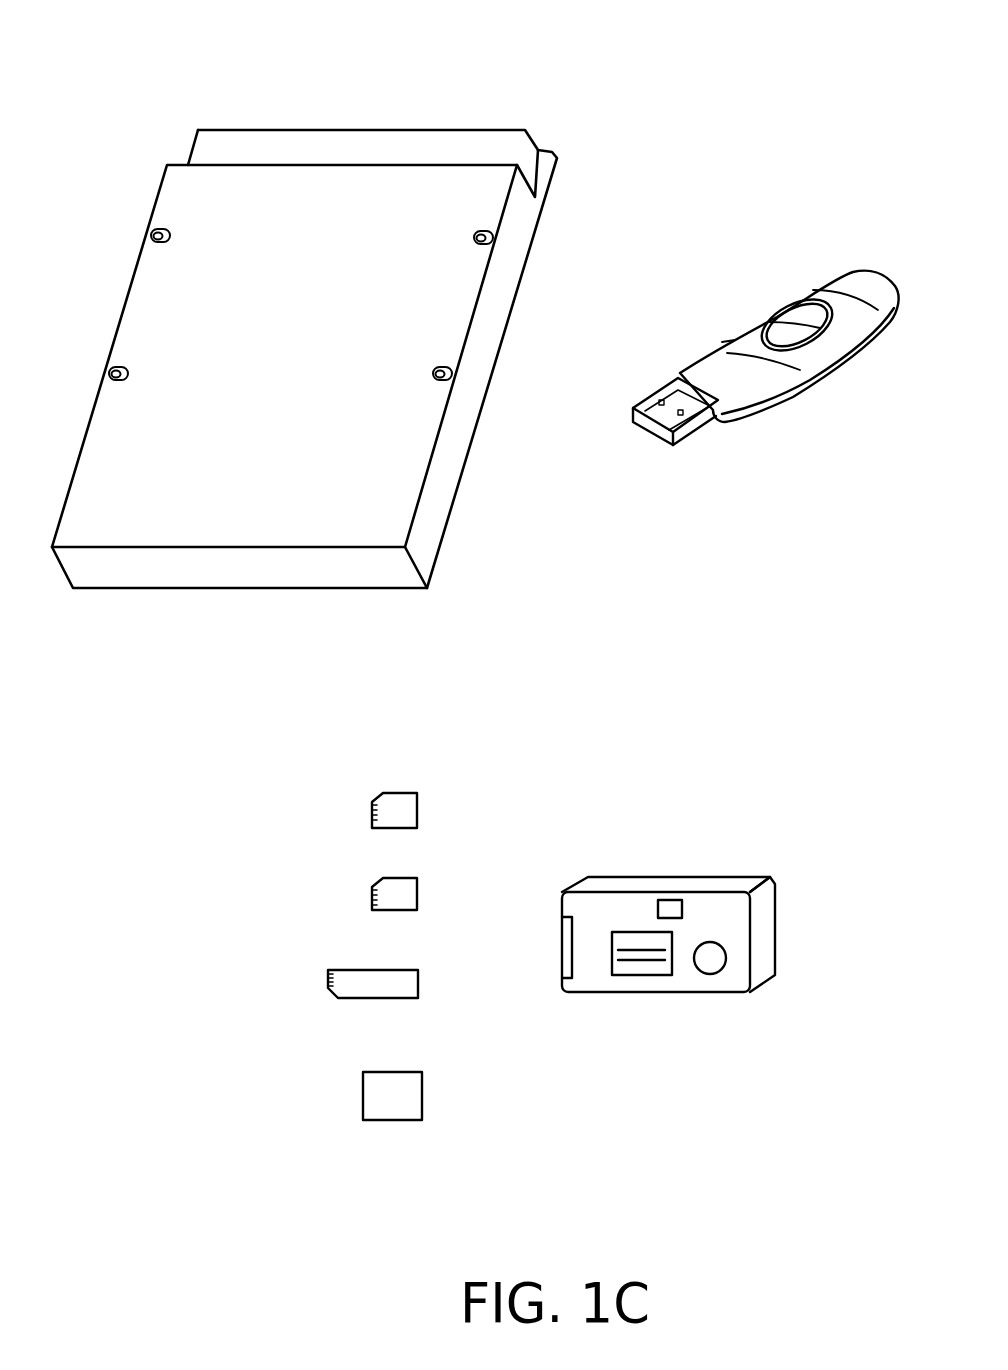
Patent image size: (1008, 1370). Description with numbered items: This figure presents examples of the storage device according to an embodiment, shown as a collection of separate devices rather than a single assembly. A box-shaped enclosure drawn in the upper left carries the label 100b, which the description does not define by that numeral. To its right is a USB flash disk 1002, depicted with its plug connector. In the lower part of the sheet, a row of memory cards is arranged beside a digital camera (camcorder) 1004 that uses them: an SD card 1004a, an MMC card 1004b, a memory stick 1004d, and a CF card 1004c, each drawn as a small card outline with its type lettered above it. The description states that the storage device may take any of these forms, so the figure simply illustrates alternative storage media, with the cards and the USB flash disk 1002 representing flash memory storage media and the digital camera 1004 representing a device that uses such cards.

The storage device enclosure 100b is at (506, 112).
The USB flash disk 1002 is at (752, 325).
The digital camera (camcorder) 1004 is at (776, 918).
The SD card 1004a is at (417, 800).
The MMC card 1004b is at (417, 885).
The CF card 1004c is at (422, 1090).
The memory stick 1004d is at (418, 985).